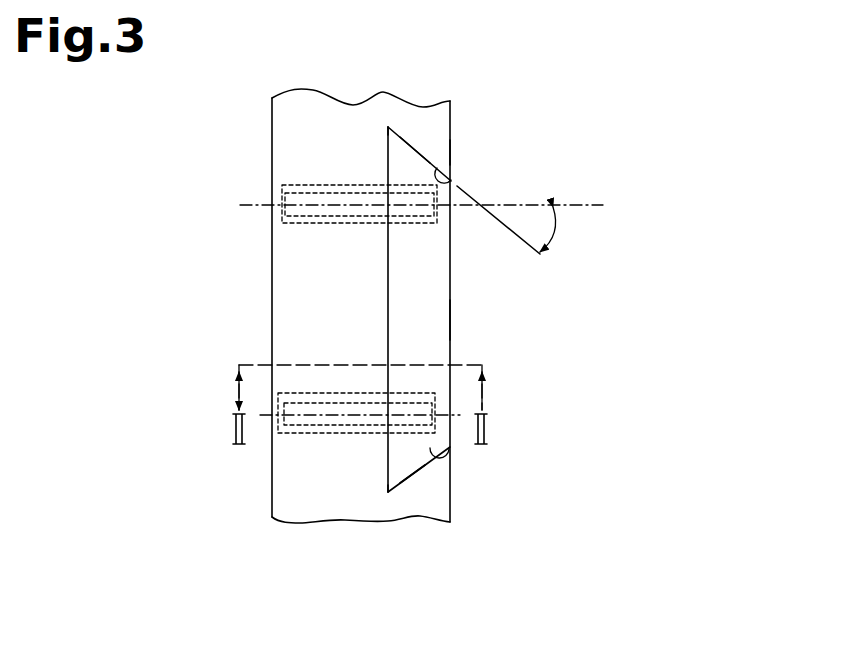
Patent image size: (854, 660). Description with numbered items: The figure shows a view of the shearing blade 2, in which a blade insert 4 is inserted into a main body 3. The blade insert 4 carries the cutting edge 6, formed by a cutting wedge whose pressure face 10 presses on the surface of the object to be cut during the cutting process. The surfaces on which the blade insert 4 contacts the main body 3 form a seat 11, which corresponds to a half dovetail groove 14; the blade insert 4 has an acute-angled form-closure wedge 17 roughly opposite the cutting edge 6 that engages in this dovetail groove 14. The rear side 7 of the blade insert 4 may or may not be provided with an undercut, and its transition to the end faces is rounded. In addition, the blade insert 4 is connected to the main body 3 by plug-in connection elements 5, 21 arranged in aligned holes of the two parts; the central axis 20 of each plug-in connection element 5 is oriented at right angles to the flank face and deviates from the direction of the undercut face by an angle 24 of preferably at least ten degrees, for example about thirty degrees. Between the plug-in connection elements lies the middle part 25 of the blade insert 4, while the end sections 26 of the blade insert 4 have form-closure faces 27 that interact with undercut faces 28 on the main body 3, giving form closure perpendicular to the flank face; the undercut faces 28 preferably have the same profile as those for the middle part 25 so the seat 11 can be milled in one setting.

The shearing blade 2 is at (414, 321).
The main body 3 is at (305, 508).
The blade insert 4 is at (437, 297).
The plug-in connection element 5 is at (282, 324).
The cutting edge 6 is at (455, 325).
The rear side 7 is at (390, 403).
The pressure face 10 is at (338, 510).
The seat 11 is at (455, 152).
The dovetail groove 14 is at (452, 180).
The form-closure wedge 17 is at (405, 141).
The central axis 20 is at (248, 203).
The opening 21 is at (280, 190).
The angle 24 is at (556, 230).
The middle part 25 is at (372, 313).
The end sections 26 is at (375, 131).
The form-closure faces 27 is at (428, 152).
The undercut faces 28 is at (525, 324).